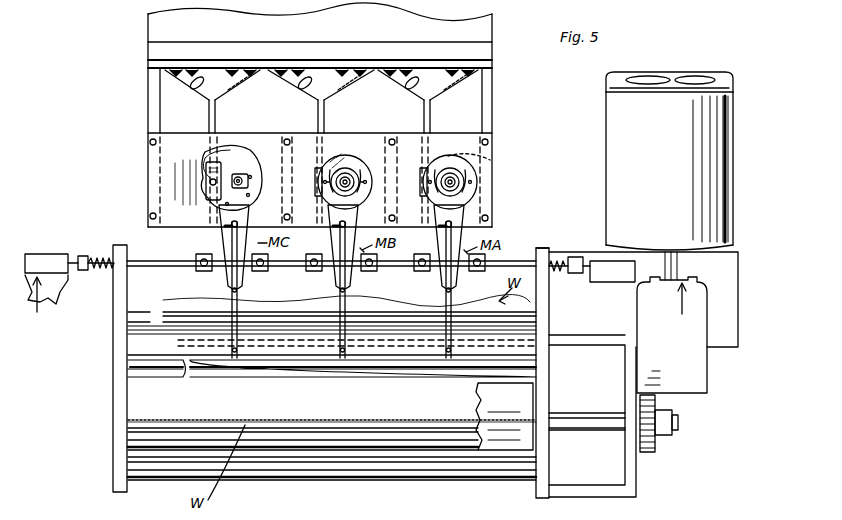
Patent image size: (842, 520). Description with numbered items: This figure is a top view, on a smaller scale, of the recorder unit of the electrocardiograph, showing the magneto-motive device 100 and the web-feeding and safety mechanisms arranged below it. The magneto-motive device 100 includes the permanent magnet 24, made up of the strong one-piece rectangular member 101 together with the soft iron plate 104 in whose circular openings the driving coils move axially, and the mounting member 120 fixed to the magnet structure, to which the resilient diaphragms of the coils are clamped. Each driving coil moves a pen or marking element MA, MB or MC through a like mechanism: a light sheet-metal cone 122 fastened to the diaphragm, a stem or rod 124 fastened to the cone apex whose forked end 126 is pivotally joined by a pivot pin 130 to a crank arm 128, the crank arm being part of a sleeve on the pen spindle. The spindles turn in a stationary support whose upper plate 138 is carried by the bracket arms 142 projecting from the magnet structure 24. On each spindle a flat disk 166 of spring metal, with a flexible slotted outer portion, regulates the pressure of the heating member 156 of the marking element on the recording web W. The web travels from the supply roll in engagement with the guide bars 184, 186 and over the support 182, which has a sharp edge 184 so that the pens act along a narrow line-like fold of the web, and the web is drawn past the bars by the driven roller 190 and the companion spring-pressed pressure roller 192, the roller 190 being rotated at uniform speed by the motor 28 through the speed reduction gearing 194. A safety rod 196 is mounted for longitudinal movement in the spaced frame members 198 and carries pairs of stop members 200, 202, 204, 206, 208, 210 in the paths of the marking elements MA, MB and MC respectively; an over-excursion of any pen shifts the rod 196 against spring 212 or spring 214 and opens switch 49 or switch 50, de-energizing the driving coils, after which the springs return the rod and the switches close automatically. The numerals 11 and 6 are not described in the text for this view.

The permanent magnet 24 is at (140, 20).
The one-piece rectangular member 101 is at (148, 30).
The soft iron plate 104 is at (168, 50).
The bracket arm 142 is at (148, 100).
The mounting member 120 is at (485, 50).
The magneto-motive device 100 is at (363, 101).
The cone 122 is at (240, 86).
The stem or rod 124 is at (209, 116).
The upper plate 138 is at (262, 120).
The forked end 126 is at (206, 172).
The pivot pin 130 is at (205, 182).
The crank arm 128 is at (158, 177).
The flat disk 166 is at (470, 170).
The heating member 156 is at (234, 360).
The guide bar 184 is at (165, 300).
The guide block 11 is at (192, 265).
The stop member 210 is at (204, 253).
The stop member 208 is at (258, 271).
The stop member 206 is at (312, 271).
The stop member 204 is at (370, 271).
The stop member 202 is at (420, 271).
The stop member 200 is at (480, 271).
The switch 49 is at (50, 254).
The spring 214 is at (100, 256).
The section view indicator 6 is at (358, 306).
The frame member 198 is at (113, 432).
The rod 196 is at (540, 250).
The support 182 is at (132, 358).
The guide bar 186 is at (128, 376).
The pressure roller 192 is at (375, 464).
The driven roller 190 is at (503, 445).
The switch 50 is at (604, 260).
The spring 212 is at (562, 257).
The motor 28 is at (734, 178).
The speed reduction gearing 194 is at (660, 395).